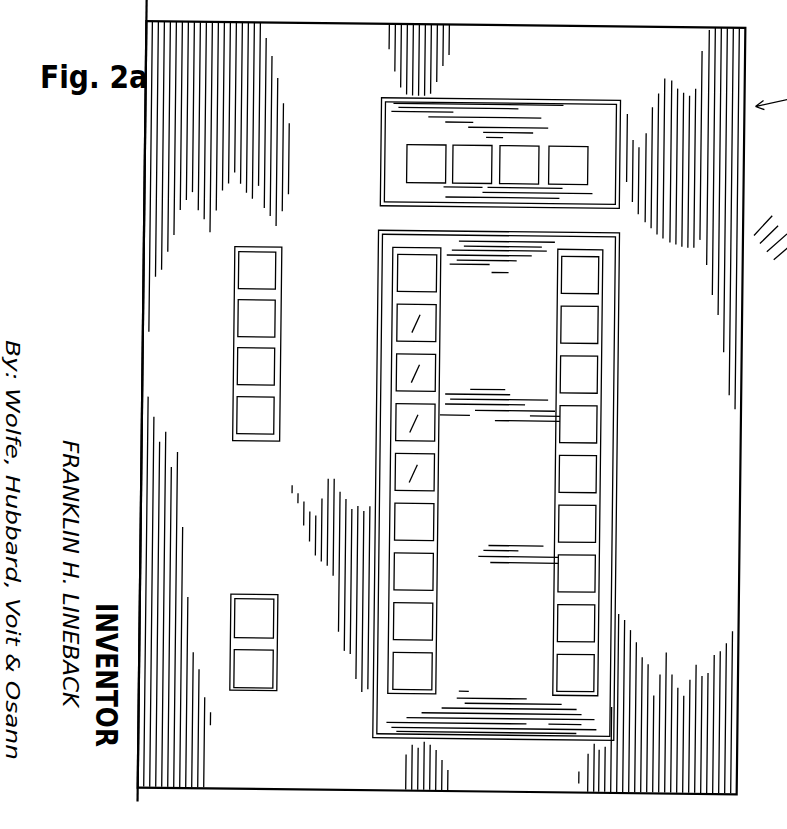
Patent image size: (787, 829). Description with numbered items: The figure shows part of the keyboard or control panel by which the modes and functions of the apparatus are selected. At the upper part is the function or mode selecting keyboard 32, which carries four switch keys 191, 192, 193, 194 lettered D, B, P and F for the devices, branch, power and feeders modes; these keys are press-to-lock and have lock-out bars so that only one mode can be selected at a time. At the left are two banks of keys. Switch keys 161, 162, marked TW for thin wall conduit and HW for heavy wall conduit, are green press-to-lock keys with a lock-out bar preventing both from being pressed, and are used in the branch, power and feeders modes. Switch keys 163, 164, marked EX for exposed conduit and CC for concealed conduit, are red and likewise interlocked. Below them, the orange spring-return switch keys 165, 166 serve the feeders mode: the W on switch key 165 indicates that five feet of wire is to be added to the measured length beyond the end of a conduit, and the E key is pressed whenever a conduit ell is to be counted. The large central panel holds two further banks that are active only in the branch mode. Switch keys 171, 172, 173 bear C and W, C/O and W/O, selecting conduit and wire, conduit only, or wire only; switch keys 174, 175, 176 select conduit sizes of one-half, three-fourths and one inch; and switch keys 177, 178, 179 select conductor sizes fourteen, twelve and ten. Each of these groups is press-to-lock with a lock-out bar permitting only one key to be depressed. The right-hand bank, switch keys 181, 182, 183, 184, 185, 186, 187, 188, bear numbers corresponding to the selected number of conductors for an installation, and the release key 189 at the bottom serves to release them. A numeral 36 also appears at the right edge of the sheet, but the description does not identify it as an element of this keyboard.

The function or mode selecting keyboard 32 is at (476, 98).
The control element 36 is at (786, 386).
The switch key 161 is at (266, 266).
The switch key 162 is at (268, 314).
The switch key 163 is at (268, 366).
The switch key 164 is at (268, 412).
The switch key 165 is at (270, 615).
The switch key 166 is at (270, 667).
The switch key 171 is at (435, 274).
The switch key 172 is at (435, 324).
The switch key 173 is at (435, 374).
The switch key 174 is at (435, 424).
The switch key 175 is at (435, 474).
The switch key 176 is at (435, 524).
The switch key 177 is at (435, 574).
The switch key 178 is at (435, 623).
The switch key 179 is at (435, 673).
The switch key 181 is at (560, 273).
The switch key 182 is at (560, 323).
The switch key 183 is at (560, 373).
The switch key 184 is at (560, 423).
The switch key 185 is at (560, 473).
The switch key 186 is at (560, 522).
The switch key 187 is at (560, 572).
The switch key 188 is at (560, 622).
The release key 189 is at (560, 672).
The switch key 191 is at (423, 183).
The switch key 192 is at (469, 183).
The switch key 193 is at (516, 183).
The switch key 194 is at (565, 183).